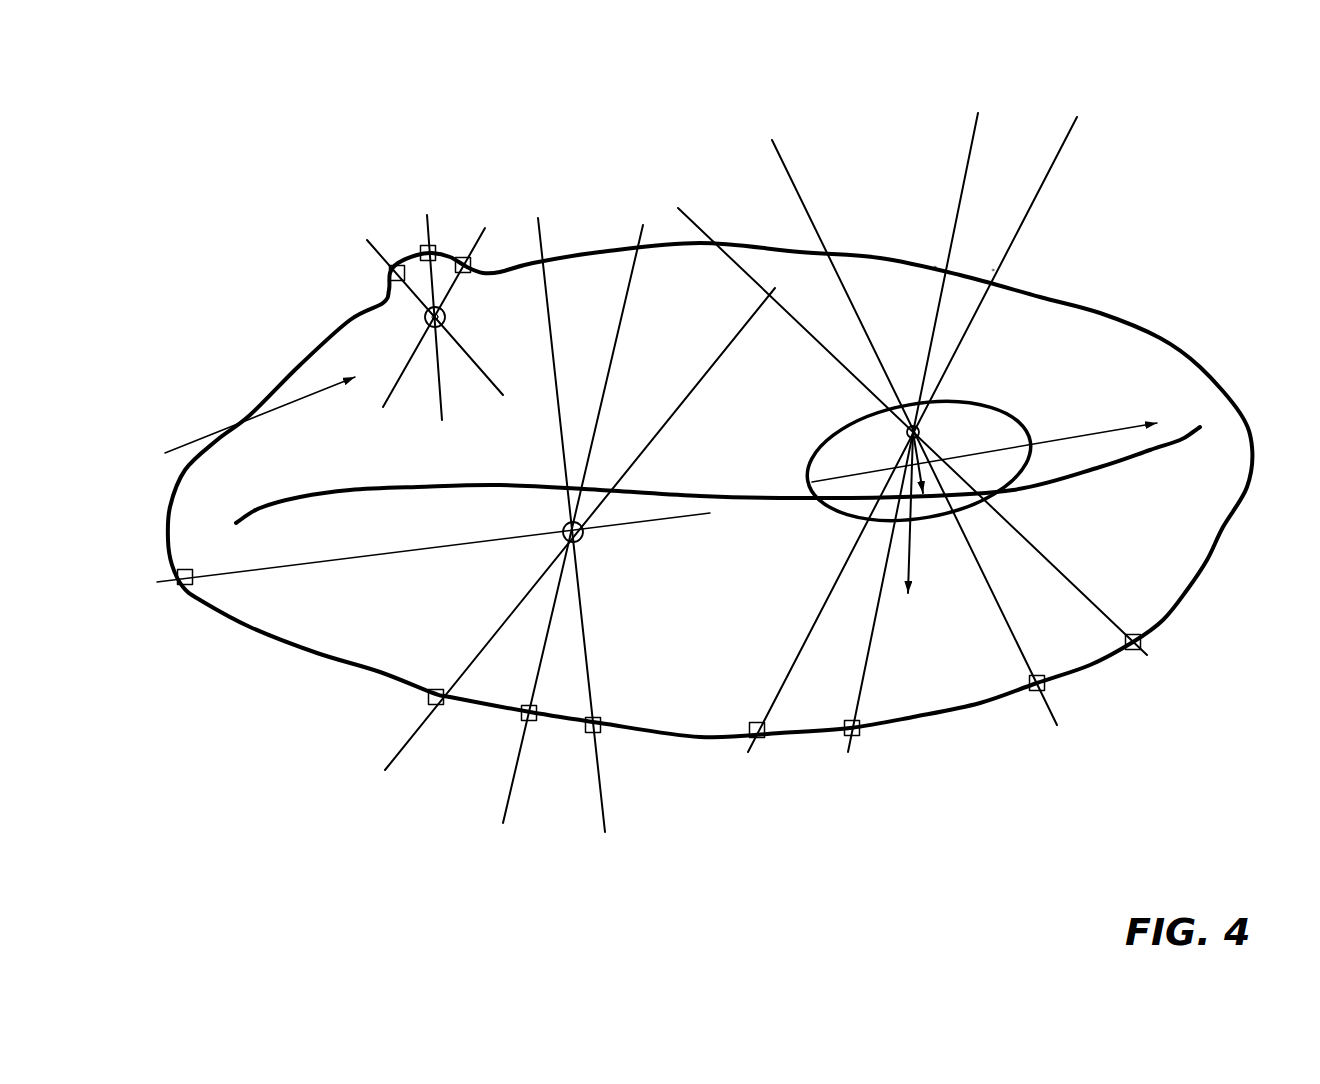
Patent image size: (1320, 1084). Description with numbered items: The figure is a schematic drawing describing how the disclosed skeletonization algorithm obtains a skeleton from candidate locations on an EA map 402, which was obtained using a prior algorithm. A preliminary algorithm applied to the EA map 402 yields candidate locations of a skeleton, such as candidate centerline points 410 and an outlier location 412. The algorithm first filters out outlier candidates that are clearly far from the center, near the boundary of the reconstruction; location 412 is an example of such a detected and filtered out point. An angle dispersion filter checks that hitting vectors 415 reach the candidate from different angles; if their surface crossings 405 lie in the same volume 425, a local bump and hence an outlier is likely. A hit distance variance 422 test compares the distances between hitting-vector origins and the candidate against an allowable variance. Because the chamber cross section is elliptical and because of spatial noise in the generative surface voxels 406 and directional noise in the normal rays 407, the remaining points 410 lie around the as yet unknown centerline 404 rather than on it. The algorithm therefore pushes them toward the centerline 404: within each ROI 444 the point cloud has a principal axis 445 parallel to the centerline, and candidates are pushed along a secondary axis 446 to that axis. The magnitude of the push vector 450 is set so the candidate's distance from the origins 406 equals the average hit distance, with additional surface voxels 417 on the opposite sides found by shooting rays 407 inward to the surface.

The EA map 402 is at (1217, 377).
The centerline 404 is at (1173, 447).
The surface crossing 405 is at (397, 262).
The generative surface voxel 406 is at (185, 585).
The ray 407 is at (540, 240).
The candidate centerline point 410 is at (583, 540).
The outlier candidate location 412 is at (423, 323).
The hitting vector 415 is at (397, 388).
The surface voxel on opposite side 417 is at (935, 267).
The hit distance variance 422 is at (238, 425).
The volume 425 is at (447, 315).
The ROI 444 is at (823, 437).
The principal axis 445 is at (1102, 427).
The secondary axis 446 is at (913, 572).
The push vector 450 is at (928, 497).